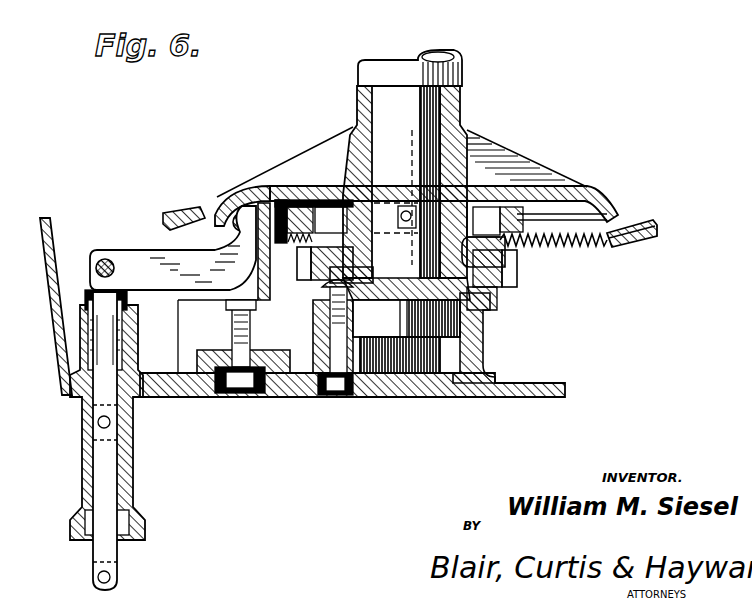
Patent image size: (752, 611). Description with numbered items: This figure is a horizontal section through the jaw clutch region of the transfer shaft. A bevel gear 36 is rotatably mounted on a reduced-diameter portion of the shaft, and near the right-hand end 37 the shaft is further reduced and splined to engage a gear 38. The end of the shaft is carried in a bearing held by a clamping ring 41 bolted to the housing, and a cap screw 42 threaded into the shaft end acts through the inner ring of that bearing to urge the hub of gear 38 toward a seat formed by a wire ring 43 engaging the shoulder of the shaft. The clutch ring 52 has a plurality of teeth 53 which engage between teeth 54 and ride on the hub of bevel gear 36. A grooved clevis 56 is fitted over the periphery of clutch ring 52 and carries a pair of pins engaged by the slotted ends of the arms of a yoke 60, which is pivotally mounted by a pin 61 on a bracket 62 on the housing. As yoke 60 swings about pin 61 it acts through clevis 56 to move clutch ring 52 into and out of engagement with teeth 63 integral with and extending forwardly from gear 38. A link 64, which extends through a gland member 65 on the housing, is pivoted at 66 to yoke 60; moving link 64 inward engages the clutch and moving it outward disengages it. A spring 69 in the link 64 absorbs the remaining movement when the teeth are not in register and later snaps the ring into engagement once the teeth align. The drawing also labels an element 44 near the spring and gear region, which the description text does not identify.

The bevel gear 36 is at (650, 220).
The right-hand end of shaft 37 is at (402, 302).
The gear 38 is at (501, 290).
The clamping ring 41 is at (318, 303).
The cap screw 42 is at (413, 342).
The wire ring 43 is at (347, 270).
The spring 44 is at (556, 244).
The clutch ring 52 is at (305, 200).
The teeth 53 is at (330, 200).
The teeth 54 is at (478, 192).
The grooved clevis 56 is at (283, 200).
The yoke 60 is at (148, 240).
The pivot pin 61 is at (242, 212).
The bracket 62 is at (224, 300).
The teeth 63 is at (500, 245).
The link 64 is at (100, 455).
The gland member 65 is at (128, 465).
The pivot 66 is at (108, 260).
The spring 69 is at (70, 372).